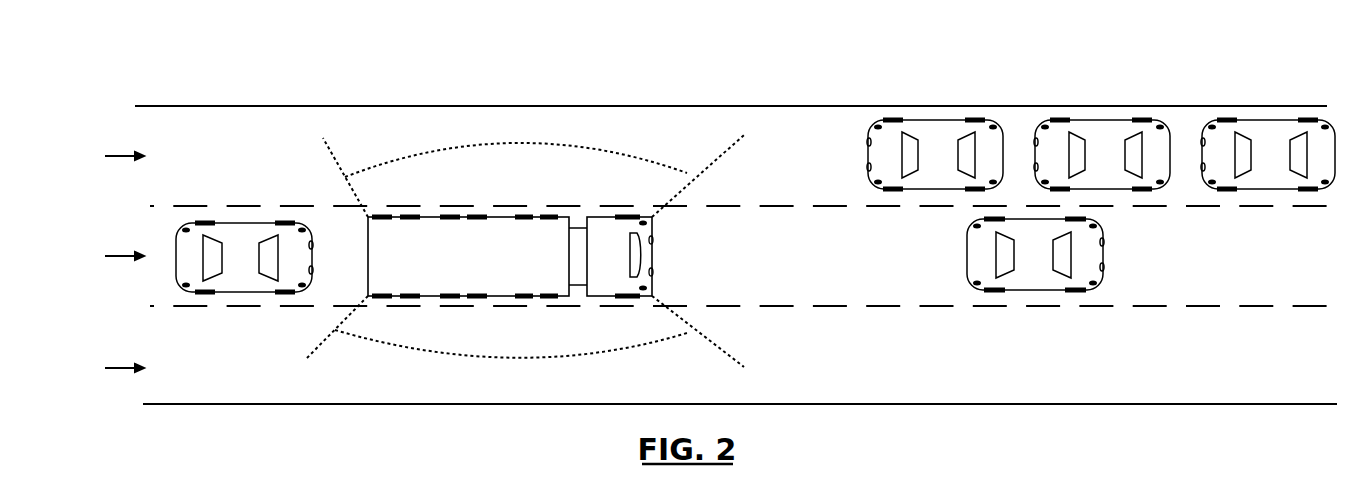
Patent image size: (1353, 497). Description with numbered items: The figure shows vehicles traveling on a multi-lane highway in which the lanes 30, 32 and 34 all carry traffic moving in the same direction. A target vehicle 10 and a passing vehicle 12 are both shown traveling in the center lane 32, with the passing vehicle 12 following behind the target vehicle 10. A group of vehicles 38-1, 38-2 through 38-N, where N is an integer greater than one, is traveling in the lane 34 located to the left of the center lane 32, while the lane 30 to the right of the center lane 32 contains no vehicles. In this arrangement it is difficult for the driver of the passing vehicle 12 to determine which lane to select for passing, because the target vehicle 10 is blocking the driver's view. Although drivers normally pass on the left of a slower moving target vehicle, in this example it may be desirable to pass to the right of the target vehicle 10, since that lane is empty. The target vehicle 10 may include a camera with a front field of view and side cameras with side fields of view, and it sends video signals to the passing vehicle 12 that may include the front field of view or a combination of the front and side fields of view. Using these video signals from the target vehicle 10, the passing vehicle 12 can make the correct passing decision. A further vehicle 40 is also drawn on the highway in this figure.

The target vehicle 10 is at (506, 191).
The passing vehicle 12 is at (269, 199).
The lane 30 is at (755, 363).
The center lane 32 is at (755, 258).
The lane 34 is at (755, 165).
The vehicle 38-1 is at (952, 93).
The vehicle 38-2 is at (1102, 94).
The vehicle 38-N is at (1262, 94).
The vehicle 40 is at (1151, 263).